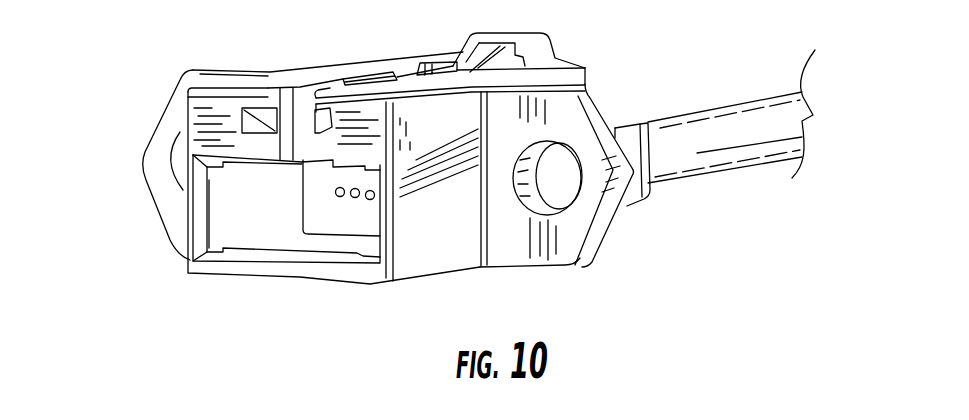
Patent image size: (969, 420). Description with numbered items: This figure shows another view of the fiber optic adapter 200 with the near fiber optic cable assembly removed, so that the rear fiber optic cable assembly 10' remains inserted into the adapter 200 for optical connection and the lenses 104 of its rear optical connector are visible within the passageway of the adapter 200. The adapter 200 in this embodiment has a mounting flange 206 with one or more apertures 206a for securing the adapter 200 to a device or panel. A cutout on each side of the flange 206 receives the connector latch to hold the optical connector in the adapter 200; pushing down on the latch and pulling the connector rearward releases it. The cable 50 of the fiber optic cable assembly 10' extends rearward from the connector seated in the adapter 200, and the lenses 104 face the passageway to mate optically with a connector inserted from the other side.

The fiber optic cable assembly 10' is at (649, 106).
The fiber optic adapter 200 is at (238, 72).
The mounting flange 206 is at (587, 267).
The aperture 206a is at (570, 188).
The lenses 104 is at (337, 196).
The cable 50 is at (707, 116).